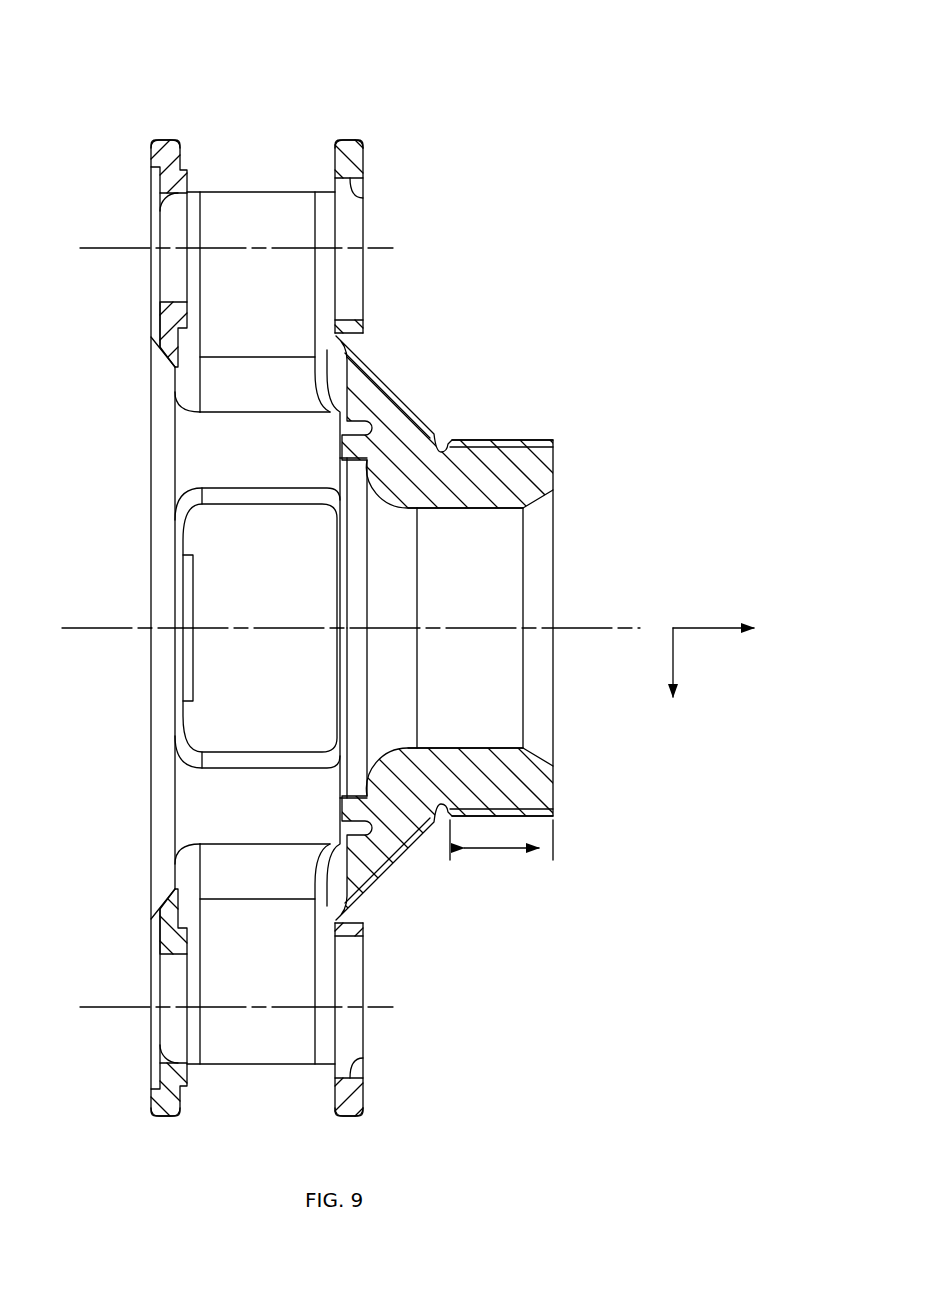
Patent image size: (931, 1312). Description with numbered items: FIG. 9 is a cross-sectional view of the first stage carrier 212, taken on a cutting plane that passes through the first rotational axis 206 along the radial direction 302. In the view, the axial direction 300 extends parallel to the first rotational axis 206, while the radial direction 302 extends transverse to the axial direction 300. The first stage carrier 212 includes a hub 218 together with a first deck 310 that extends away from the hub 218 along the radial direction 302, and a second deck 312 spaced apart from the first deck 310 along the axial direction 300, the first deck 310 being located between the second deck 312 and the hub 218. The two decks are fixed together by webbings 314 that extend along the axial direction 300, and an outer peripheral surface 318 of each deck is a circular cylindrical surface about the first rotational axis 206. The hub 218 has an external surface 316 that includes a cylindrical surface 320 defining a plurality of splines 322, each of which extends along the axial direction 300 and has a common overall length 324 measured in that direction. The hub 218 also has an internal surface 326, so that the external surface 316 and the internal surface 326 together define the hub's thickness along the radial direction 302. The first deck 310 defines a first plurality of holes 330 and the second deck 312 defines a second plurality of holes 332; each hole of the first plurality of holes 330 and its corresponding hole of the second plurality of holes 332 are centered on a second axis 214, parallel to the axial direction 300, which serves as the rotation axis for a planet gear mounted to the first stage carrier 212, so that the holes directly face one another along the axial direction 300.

The first stage carrier 212 is at (450, 42).
The second axis 214 is at (102, 252).
The first rotational axis 206 is at (88, 630).
The hub 218 is at (494, 340).
The axial direction 300 is at (744, 630).
The radial direction 302 is at (676, 687).
The first deck 310 is at (365, 150).
The second deck 312 is at (150, 155).
The webbings 314 is at (210, 445).
The external surface 316 is at (397, 392).
The outer peripheral surface 318 is at (160, 138).
The cylindrical surface 320 is at (505, 438).
The splines 322 is at (501, 628).
The overall length 324 is at (498, 850).
The internal surface 326 is at (463, 510).
The first plurality of holes 330 is at (352, 180).
The second plurality of holes 332 is at (165, 205).